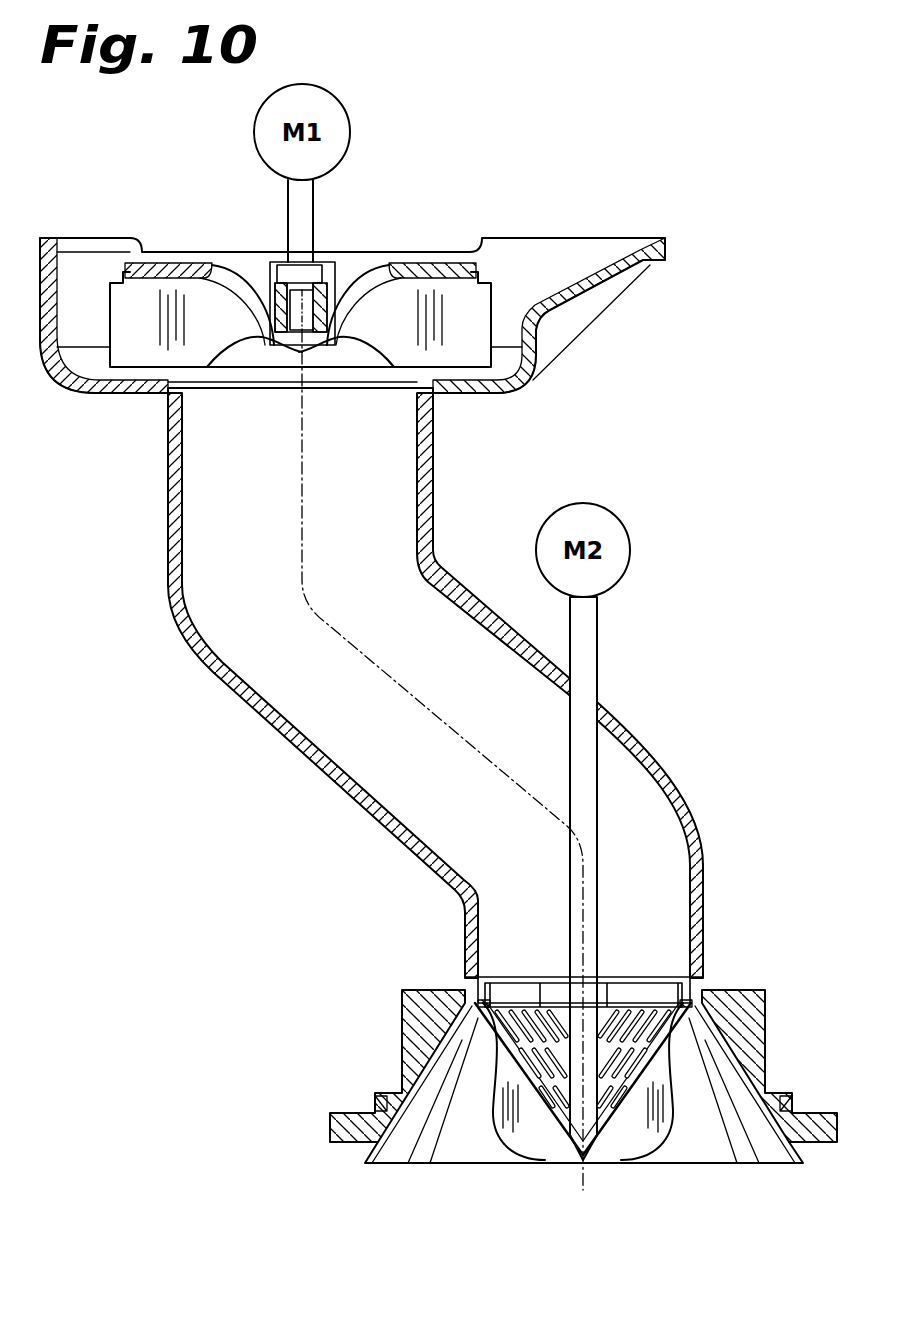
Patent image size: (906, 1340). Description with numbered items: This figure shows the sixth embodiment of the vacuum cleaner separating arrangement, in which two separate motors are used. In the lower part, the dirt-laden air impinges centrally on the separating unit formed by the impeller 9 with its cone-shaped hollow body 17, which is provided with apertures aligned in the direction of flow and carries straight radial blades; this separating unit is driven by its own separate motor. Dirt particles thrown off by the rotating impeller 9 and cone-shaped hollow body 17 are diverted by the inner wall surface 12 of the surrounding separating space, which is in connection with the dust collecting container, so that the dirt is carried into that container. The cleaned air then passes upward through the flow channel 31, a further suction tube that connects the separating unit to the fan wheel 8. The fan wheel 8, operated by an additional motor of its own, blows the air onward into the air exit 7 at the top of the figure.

The air exit 7 is at (565, 255).
The fan wheel 8 is at (463, 305).
The flow channel 31 is at (625, 802).
The inner wall surface 12 is at (745, 1080).
The cone-shaped hollow body 17 is at (540, 1100).
The impeller 9 is at (632, 1130).